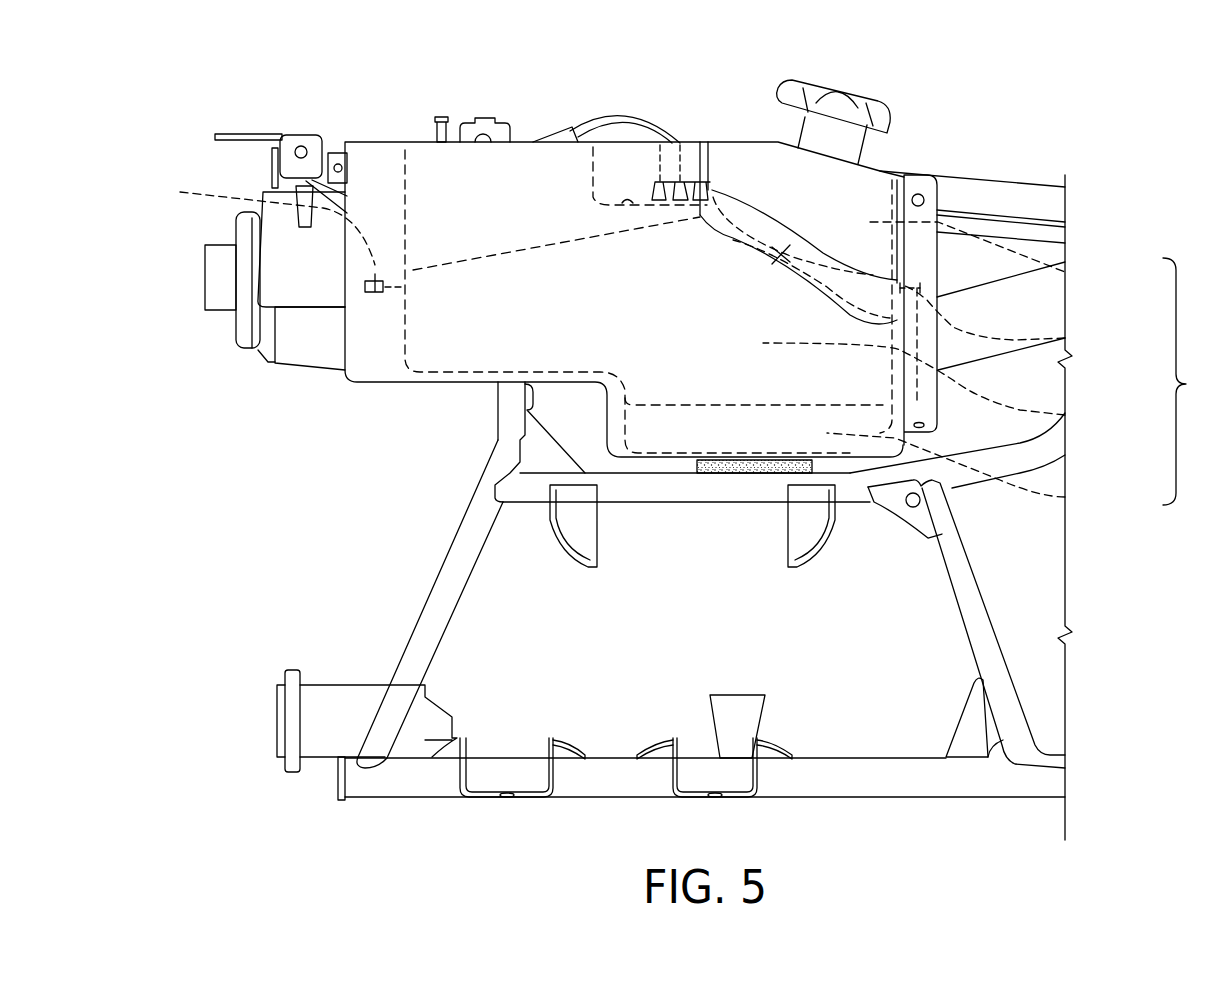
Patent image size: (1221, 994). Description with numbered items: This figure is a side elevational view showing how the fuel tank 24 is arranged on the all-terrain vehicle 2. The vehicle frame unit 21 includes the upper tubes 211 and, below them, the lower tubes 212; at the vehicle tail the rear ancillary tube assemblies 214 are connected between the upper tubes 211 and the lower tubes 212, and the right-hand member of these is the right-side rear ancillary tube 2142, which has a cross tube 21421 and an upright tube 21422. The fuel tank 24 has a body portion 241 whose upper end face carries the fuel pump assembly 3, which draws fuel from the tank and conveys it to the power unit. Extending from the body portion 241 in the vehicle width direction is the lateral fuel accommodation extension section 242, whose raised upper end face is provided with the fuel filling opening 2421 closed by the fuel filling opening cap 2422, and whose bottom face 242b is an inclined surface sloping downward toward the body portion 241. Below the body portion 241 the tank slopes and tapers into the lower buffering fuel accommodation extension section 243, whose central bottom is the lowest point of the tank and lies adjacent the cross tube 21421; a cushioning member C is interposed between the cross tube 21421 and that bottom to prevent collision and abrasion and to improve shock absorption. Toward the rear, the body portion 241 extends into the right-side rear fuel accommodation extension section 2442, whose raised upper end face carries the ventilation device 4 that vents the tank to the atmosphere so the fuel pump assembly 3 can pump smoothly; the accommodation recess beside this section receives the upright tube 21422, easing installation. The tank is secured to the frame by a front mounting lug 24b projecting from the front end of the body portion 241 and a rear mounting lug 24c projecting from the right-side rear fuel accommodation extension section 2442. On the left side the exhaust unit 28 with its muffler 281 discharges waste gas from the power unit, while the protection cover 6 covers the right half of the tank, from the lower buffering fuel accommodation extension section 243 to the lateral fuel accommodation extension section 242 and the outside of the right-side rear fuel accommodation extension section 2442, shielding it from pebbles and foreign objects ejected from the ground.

The all-terrain vehicle 2 is at (214, 707).
The vehicle frame unit 21 is at (1028, 174).
The upper tubes 211 is at (978, 194).
The lower tubes 212 is at (877, 773).
The rear ancillary tube assemblies 214 is at (422, 615).
The right-side rear ancillary tube 2142 is at (432, 559).
The cross tube 21421 is at (668, 490).
The upright tube 21422 is at (472, 518).
The fuel tank 24 is at (1188, 381).
The front mounting lug 24b is at (1065, 338).
The rear mounting lug 24c is at (273, 234).
The body portion 241 is at (1065, 413).
The lateral fuel accommodation extension section 242 is at (1065, 269).
The bottom face 242b is at (752, 268).
The fuel filling opening 2421 is at (848, 143).
The fuel filling opening cap 2422 is at (866, 103).
The lower buffering fuel accommodation extension section 243 is at (1065, 497).
The right-side rear fuel accommodation extension section 2442 is at (442, 187).
The exhaust unit 28 is at (213, 350).
The muffler 281 is at (300, 348).
The fuel pump assembly 3 is at (672, 178).
The ventilation device 4 is at (441, 117).
The protection cover 6 is at (372, 372).
The cushioning member C is at (738, 473).